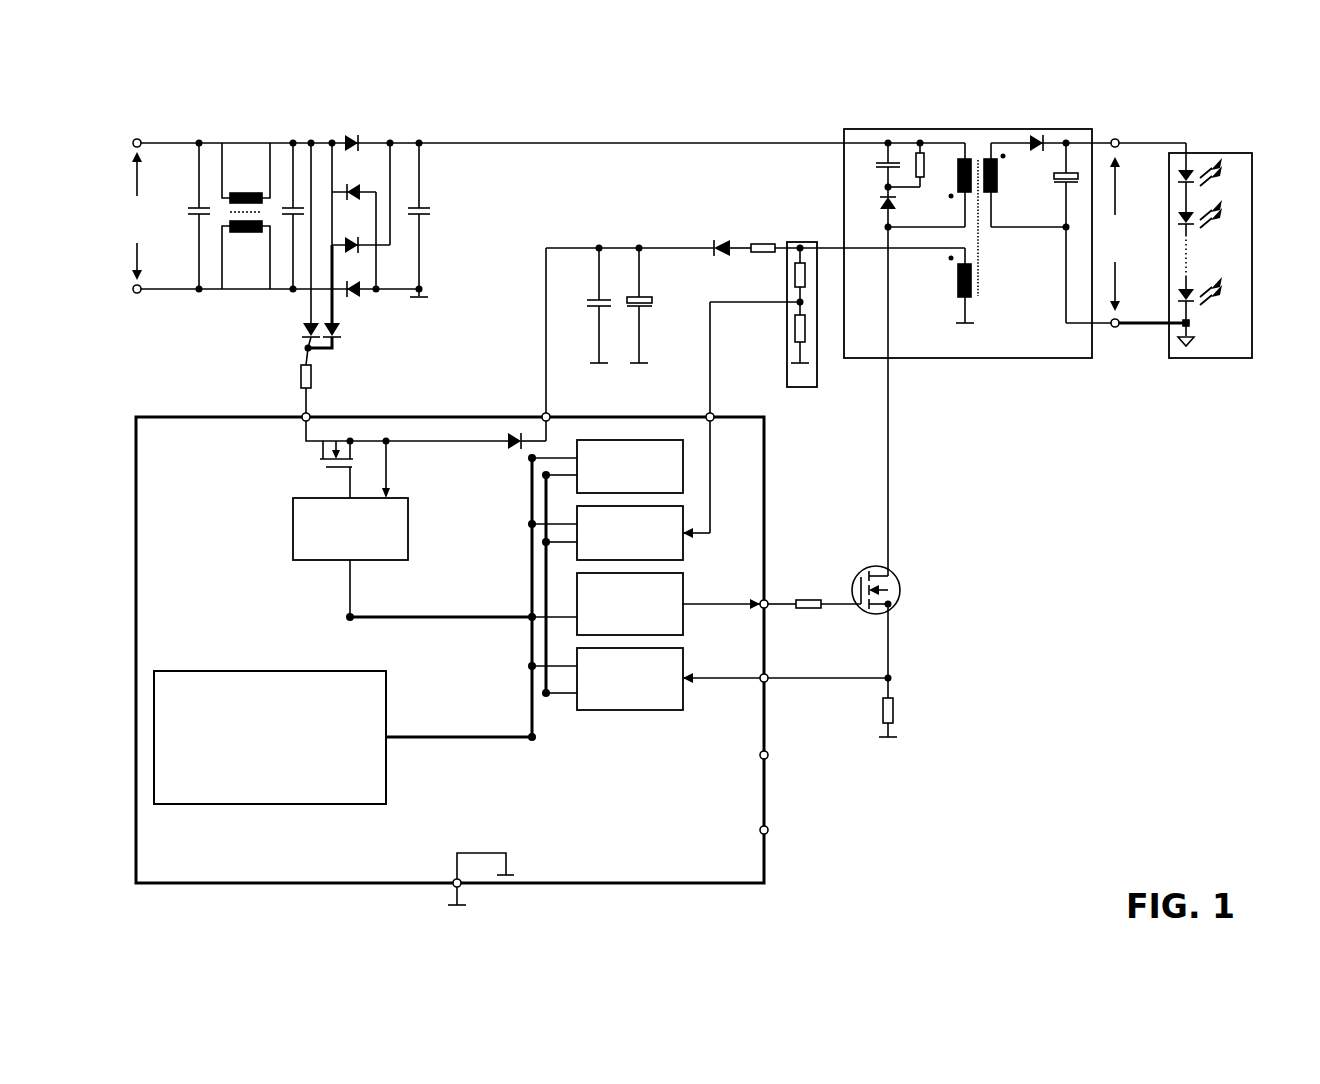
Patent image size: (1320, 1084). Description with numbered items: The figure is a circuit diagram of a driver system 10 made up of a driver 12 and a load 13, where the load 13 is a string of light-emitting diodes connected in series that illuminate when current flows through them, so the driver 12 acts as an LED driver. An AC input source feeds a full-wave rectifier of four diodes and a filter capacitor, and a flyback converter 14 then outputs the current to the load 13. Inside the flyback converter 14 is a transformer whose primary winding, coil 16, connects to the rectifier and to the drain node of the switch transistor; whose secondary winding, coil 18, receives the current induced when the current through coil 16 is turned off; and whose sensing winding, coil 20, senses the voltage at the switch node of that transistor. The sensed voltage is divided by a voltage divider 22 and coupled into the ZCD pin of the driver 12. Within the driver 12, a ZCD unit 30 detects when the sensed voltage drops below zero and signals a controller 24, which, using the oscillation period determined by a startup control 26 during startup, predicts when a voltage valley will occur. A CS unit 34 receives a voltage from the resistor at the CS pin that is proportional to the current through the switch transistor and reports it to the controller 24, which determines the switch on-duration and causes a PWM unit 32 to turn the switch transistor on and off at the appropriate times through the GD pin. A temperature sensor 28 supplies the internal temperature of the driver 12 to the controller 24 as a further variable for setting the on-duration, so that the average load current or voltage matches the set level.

The driver system 10 is at (1247, 111).
The driver 12 is at (226, 484).
The load 13 is at (1210, 358).
The flyback converter 14 is at (900, 358).
The coil 16 is at (991, 195).
The coil 18 is at (995, 195).
The coil 20 is at (966, 300).
The voltage divider 22 is at (794, 243).
The controller 24 is at (258, 770).
The startup control 26 is at (342, 559).
The temperature sensor 28 is at (622, 493).
The ZCD unit 30 is at (622, 550).
The PWM unit 32 is at (622, 619).
The CS unit 34 is at (622, 696).